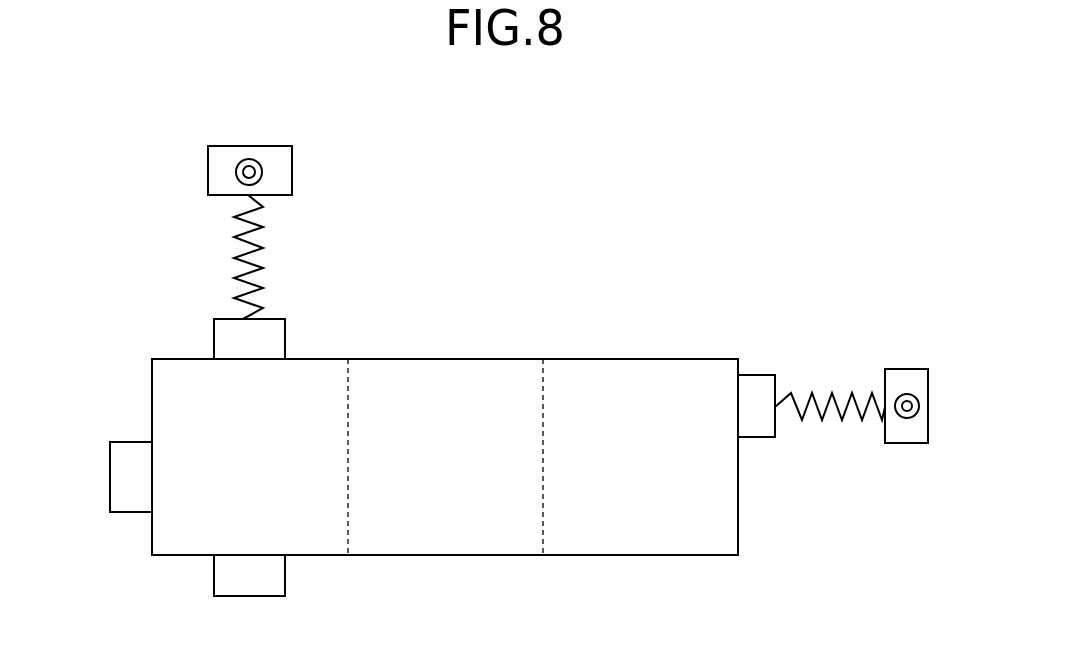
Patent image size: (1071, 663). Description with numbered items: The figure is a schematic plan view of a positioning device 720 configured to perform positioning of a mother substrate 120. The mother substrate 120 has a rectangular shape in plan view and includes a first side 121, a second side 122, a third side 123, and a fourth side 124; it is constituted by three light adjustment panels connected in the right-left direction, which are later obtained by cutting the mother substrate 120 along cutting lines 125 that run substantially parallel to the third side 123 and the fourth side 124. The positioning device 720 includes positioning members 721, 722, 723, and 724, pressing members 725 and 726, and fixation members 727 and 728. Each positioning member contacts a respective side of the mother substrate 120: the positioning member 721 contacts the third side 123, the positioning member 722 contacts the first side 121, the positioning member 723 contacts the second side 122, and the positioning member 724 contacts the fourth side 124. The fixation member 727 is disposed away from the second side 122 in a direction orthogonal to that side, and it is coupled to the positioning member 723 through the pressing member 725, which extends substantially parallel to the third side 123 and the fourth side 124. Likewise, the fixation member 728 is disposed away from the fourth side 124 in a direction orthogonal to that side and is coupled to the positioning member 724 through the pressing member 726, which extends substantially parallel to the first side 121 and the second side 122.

The mother substrate 120 is at (611, 359).
The first side 121 is at (445, 558).
The second side 122 is at (443, 357).
The third side 123 is at (150, 543).
The fourth side 124 is at (740, 535).
The cutting lines 125 is at (350, 455).
The positioning device 720 is at (902, 313).
The positioning member 721 is at (130, 478).
The positioning member 722 is at (251, 580).
The positioning member 723 is at (236, 341).
The positioning member 724 is at (757, 425).
The pressing member 725 is at (233, 259).
The pressing member 726 is at (829, 397).
The fixation member 727 is at (223, 172).
The fixation member 728 is at (905, 378).